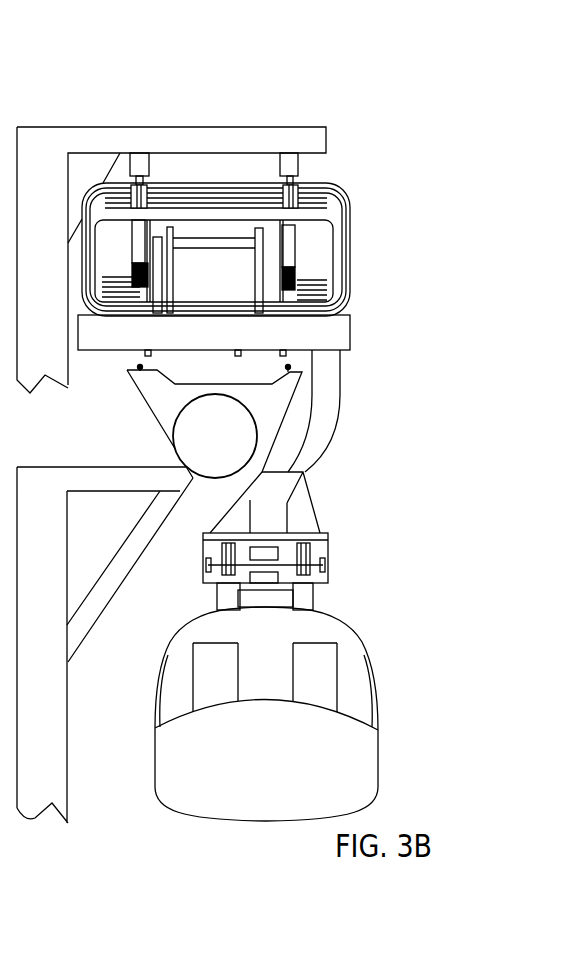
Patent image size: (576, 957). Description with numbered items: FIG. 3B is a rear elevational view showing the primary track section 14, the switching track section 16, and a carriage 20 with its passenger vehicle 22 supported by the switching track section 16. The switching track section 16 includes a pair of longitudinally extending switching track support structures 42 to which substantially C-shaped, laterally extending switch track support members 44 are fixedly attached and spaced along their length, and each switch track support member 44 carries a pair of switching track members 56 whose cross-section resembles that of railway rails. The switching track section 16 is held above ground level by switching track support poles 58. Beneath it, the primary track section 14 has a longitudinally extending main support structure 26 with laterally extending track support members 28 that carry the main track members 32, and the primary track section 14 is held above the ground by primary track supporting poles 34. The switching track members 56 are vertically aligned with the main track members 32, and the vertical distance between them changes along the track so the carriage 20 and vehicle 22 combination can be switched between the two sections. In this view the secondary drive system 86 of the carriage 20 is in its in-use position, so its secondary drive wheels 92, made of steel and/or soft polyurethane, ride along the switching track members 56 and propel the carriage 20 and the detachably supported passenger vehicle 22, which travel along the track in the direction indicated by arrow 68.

The switching track support pole 58 is at (72, 116).
The switching track support structure 42 is at (300, 170).
The switching track section 16 is at (352, 237).
The switch track support member 44 is at (350, 276).
The secondary drive system 86 is at (302, 234).
The secondary drive wheel 92 is at (296, 253).
The switching track member 56 is at (128, 268).
The carriage 20 is at (355, 348).
The track support member 28 is at (280, 412).
The primary track supporting pole 34 is at (72, 783).
The primary track section 14 is at (148, 416).
The main track member 32 is at (136, 366).
The main support structure 26 is at (182, 452).
The passenger vehicle 22 is at (345, 622).
The direction of travel arrow 68 is at (155, 714).